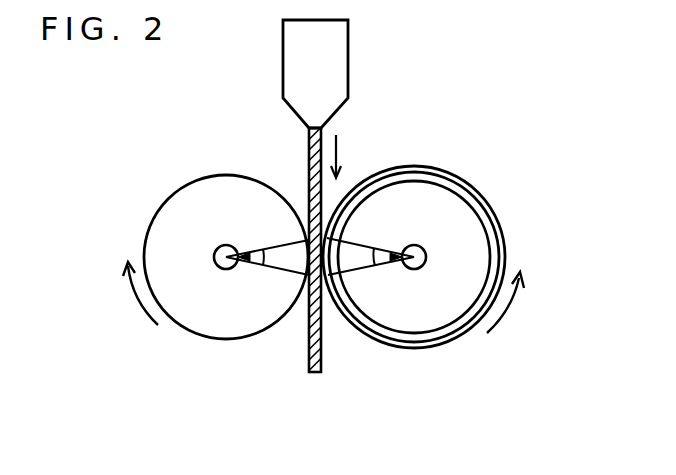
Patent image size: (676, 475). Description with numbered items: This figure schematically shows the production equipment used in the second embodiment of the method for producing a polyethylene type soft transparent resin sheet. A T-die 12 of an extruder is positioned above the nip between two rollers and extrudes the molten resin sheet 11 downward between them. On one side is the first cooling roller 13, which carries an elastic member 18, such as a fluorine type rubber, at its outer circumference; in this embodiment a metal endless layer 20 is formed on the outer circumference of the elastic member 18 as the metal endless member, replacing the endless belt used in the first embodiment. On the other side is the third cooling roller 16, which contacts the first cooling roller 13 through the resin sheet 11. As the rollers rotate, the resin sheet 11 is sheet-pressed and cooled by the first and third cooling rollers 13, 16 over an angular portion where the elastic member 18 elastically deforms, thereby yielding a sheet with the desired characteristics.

The resin sheet 11 is at (320, 362).
The T-die 12 is at (335, 70).
The first cooling roller 13 is at (460, 248).
The third cooling roller 16 is at (195, 207).
The elastic member 18 is at (477, 210).
The metal endless layer 20 is at (444, 172).